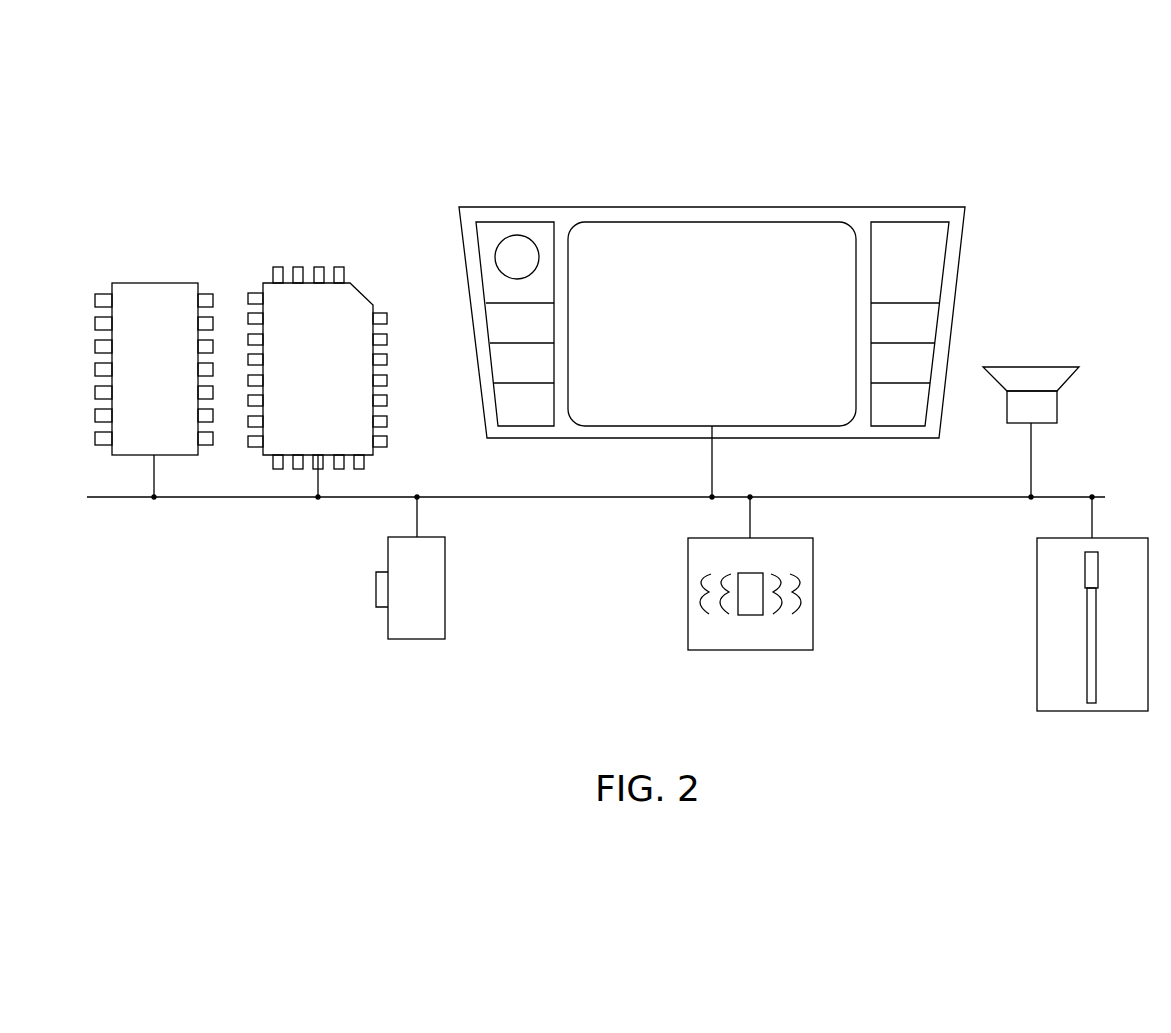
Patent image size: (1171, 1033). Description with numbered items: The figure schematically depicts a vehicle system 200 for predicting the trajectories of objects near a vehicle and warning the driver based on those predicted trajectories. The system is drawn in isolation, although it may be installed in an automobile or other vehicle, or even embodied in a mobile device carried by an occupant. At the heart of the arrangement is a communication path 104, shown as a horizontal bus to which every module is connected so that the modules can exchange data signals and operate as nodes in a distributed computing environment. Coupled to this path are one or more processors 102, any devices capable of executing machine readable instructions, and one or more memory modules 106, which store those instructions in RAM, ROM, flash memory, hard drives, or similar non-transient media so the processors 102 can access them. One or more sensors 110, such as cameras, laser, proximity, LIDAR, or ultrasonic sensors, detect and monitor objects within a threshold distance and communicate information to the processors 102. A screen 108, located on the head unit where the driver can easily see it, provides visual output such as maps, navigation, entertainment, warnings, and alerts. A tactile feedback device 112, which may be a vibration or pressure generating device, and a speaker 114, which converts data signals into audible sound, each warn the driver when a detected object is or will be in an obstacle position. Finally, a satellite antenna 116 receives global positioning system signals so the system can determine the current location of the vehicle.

The vehicle system 200 is at (939, 163).
The processors 102 is at (144, 283).
The communication path 104 is at (91, 500).
The memory modules 106 is at (350, 283).
The screen 108 is at (772, 207).
The sensors 110 is at (414, 639).
The tactile feedback device 112 is at (743, 650).
The speaker 114 is at (1027, 367).
The satellite antenna 116 is at (1093, 711).